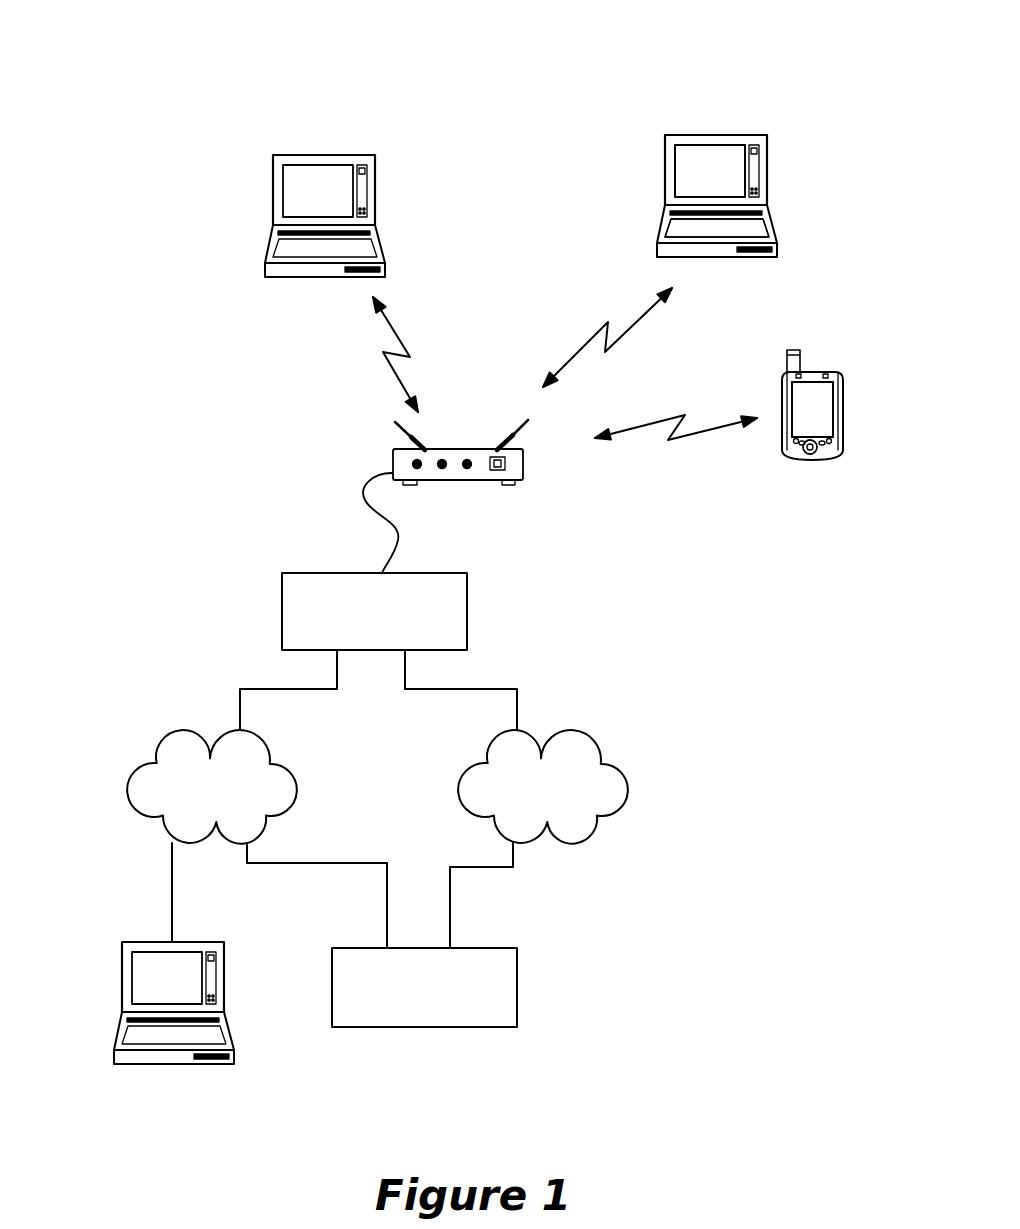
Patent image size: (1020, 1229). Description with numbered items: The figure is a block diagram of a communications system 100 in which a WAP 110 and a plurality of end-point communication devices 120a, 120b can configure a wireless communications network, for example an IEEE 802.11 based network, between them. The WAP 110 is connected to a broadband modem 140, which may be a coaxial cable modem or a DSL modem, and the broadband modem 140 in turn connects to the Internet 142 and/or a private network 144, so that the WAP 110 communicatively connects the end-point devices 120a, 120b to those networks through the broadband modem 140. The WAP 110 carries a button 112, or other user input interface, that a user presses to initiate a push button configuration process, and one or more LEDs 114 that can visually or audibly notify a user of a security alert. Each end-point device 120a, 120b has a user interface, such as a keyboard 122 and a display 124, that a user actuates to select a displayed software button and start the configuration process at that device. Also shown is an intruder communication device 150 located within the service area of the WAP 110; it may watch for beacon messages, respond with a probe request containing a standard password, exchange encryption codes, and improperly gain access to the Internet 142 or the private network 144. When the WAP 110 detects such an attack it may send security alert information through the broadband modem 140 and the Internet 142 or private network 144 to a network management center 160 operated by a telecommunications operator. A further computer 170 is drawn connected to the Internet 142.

The communications system 100 is at (506, 90).
The WAP 110 is at (458, 474).
The button 112 is at (507, 463).
The LEDs 114 is at (470, 467).
The end-point communication device 120a is at (717, 135).
The end-point communication device 120b is at (810, 370).
The keyboard 122 is at (753, 228).
The display 124 is at (730, 172).
The broadband modem 140 is at (467, 607).
The Internet 142 is at (165, 740).
The private network 144 is at (592, 738).
The intruder communication device 150 is at (323, 155).
The network management center 160 is at (517, 973).
The remote computer 170 is at (123, 1000).